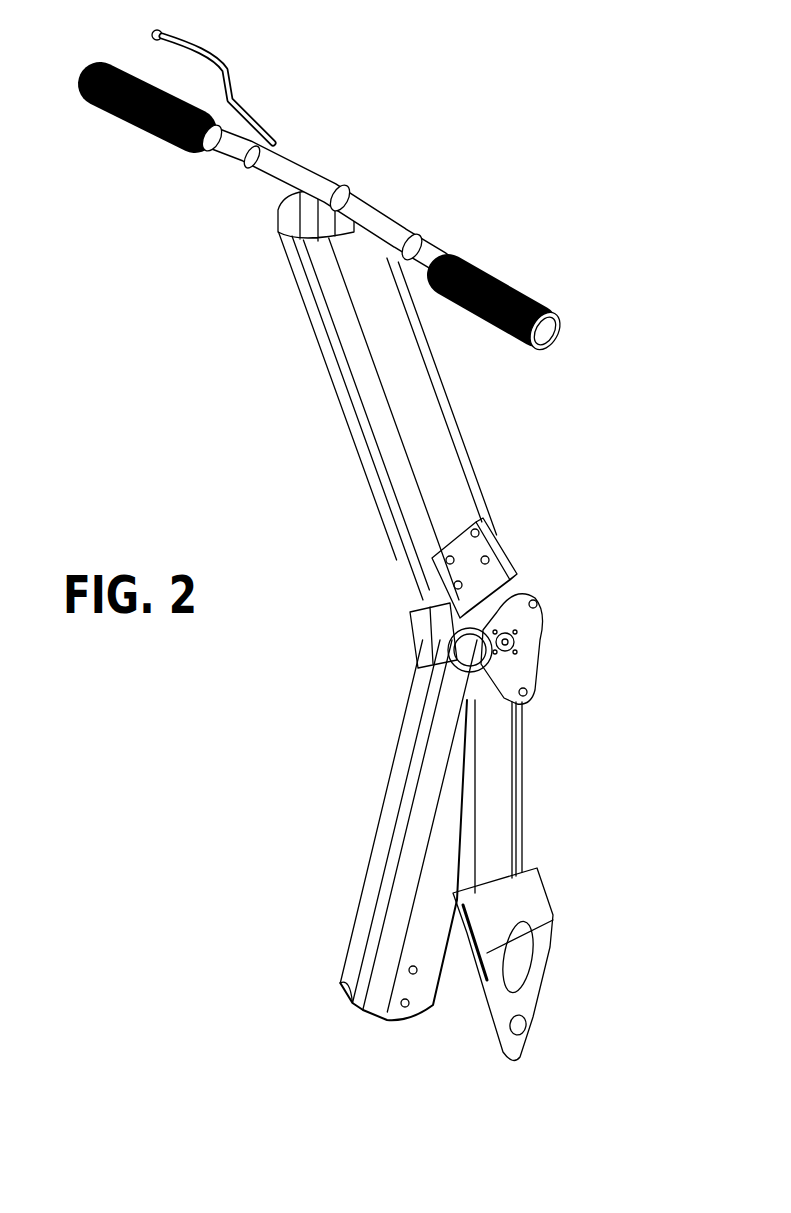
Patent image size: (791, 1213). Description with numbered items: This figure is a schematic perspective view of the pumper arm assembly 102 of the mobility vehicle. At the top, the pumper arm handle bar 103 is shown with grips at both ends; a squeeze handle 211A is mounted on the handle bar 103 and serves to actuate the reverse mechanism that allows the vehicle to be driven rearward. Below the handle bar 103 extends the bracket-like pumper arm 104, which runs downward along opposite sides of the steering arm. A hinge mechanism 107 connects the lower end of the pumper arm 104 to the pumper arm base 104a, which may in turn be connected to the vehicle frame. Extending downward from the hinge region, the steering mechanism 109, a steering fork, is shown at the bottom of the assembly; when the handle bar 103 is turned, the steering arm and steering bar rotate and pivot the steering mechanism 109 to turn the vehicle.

The pumper arm assembly 102 is at (378, 545).
The pumper arm handle bar 103 is at (308, 152).
The pumper arm 104 is at (457, 537).
The pumper arm base 104a is at (390, 773).
The hinge mechanism 107 is at (543, 595).
The steering mechanism 109 is at (538, 882).
The squeeze handle 211A is at (237, 73).